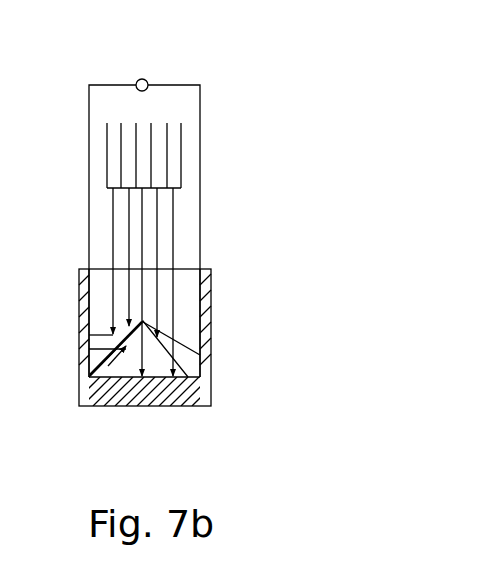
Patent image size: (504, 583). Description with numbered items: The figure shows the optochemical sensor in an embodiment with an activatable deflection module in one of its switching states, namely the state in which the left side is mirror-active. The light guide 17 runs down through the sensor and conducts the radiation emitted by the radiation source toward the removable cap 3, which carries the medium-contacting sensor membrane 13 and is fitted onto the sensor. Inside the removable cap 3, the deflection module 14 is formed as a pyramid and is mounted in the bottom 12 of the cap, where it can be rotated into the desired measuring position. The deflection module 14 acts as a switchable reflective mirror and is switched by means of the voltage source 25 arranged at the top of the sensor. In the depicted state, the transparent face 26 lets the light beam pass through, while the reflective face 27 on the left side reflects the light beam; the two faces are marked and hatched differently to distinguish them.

The voltage source 25 is at (142, 79).
The light guide 17 is at (181, 147).
The removable cap 3 is at (227, 297).
The sensor membrane 13 is at (75, 318).
The transparent face 26 is at (160, 338).
The deflection module 14 is at (201, 355).
The reflective face 27 is at (108, 366).
The bottom 12 is at (182, 386).